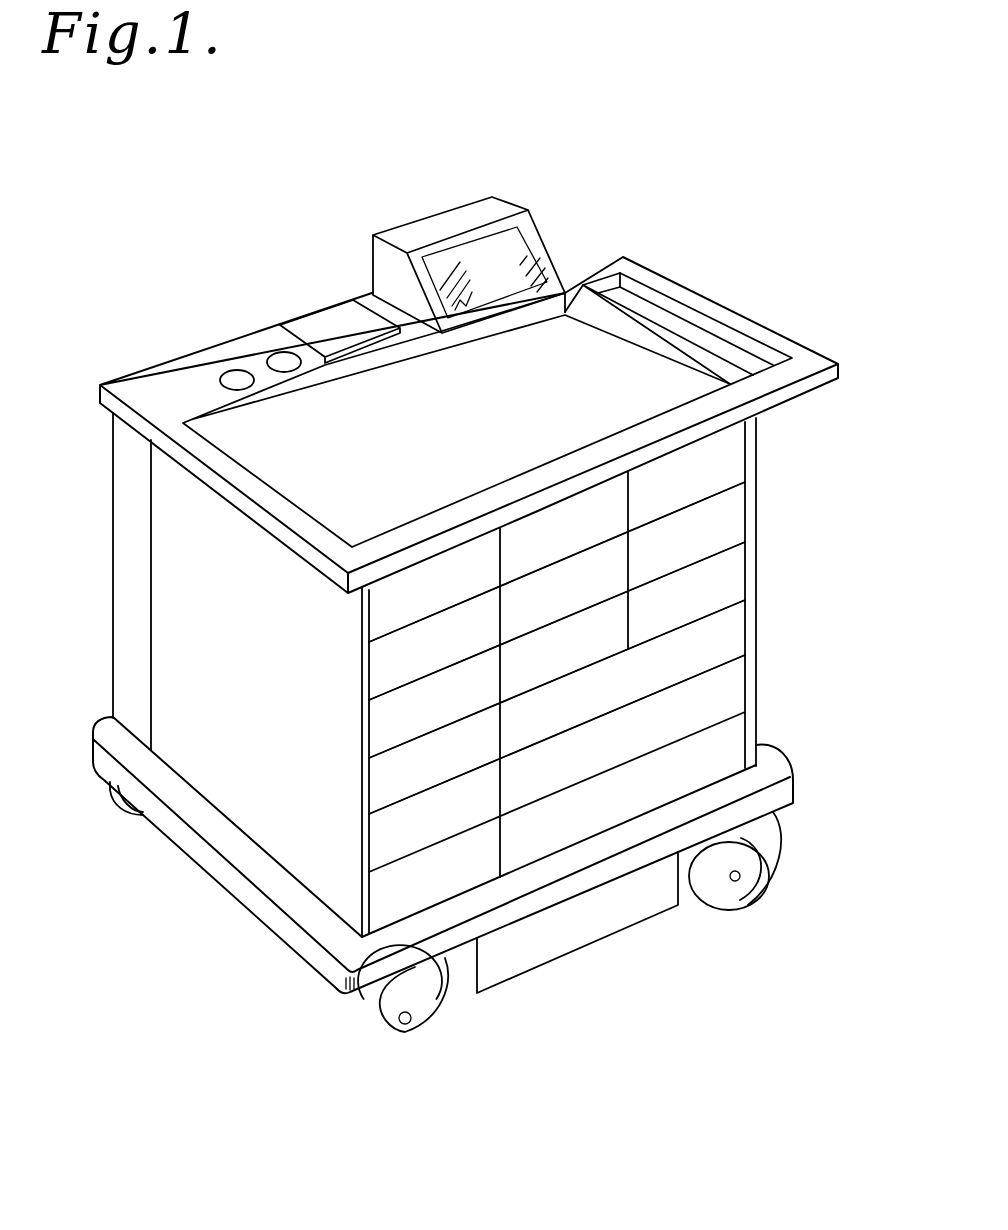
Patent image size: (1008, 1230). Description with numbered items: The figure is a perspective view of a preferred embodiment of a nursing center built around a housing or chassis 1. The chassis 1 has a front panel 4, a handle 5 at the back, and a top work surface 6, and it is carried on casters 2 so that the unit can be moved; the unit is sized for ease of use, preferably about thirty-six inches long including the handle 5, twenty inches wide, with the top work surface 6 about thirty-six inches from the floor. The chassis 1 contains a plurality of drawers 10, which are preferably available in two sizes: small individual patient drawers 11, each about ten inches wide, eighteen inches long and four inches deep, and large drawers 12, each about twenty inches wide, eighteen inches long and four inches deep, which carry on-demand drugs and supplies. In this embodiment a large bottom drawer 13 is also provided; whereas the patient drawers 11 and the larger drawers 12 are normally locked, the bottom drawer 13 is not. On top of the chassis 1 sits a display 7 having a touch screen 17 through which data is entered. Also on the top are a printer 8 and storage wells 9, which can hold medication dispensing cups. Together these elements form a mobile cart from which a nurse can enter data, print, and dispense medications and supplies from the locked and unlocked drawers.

The housing or chassis 1 is at (678, 258).
The casters 2 is at (117, 812).
The front panel 4 is at (256, 683).
The handle 5 is at (733, 317).
The top work surface 6 is at (455, 436).
The display 7 is at (476, 212).
The printer 8 is at (337, 323).
The storage wells 9 is at (235, 375).
The drawers 10 is at (683, 588).
The small individual patient drawers 11 is at (702, 523).
The large drawers 12 is at (673, 718).
The large bottom drawer 13 is at (585, 931).
The touch screen 17 is at (488, 253).